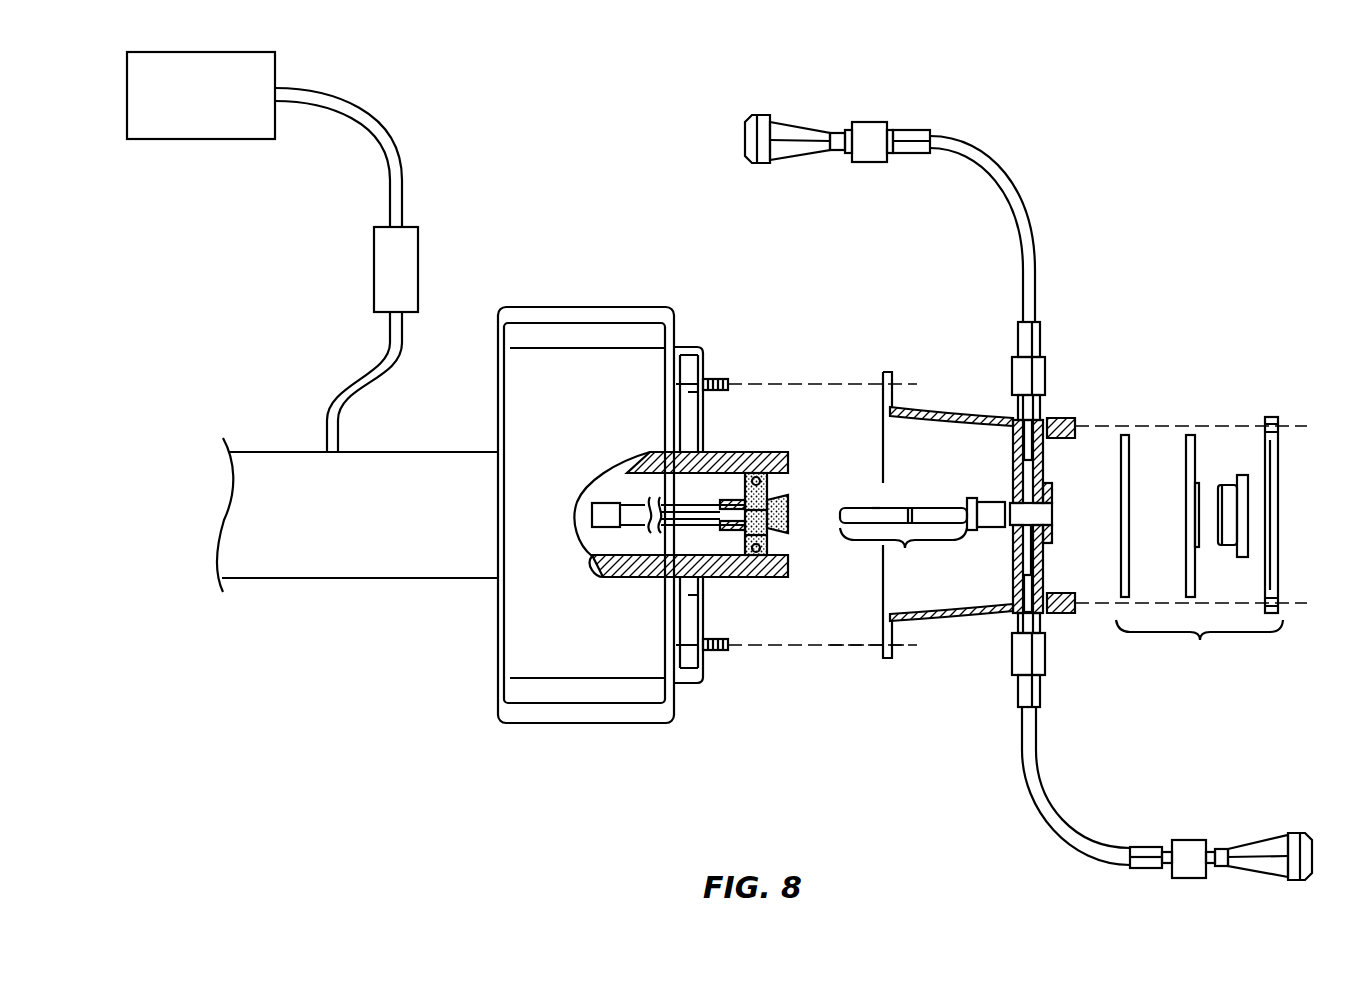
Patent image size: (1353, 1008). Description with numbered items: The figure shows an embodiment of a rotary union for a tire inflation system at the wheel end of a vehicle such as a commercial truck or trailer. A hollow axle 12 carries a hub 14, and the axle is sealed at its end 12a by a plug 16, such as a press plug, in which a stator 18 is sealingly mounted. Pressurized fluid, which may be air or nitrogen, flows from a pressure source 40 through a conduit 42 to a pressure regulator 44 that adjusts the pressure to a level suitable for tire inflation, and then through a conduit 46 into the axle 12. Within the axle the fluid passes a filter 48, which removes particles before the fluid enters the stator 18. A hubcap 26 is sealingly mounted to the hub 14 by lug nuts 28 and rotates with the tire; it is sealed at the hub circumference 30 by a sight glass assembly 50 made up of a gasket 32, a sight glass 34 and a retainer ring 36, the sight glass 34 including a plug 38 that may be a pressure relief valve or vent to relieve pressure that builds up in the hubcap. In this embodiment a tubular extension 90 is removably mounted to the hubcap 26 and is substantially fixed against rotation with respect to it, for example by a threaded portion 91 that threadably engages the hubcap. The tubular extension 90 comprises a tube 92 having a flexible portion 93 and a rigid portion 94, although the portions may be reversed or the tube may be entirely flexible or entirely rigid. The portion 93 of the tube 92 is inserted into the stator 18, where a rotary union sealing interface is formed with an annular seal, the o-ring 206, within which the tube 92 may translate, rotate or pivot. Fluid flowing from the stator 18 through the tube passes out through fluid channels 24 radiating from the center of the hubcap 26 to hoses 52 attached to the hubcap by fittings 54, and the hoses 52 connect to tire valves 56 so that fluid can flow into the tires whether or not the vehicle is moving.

The hollow trailer axle 12 is at (352, 580).
The axle end 12a is at (752, 452).
The hub 14 is at (585, 725).
The plug 16 is at (767, 540).
The stator 18 is at (793, 508).
The fluid channels 24 is at (1048, 478).
The hubcap 26 is at (930, 622).
The lug nuts 28 is at (712, 378).
The hub circumference 30 is at (1080, 410).
The gasket 32 is at (1130, 445).
The sight glass 34 is at (1197, 445).
The retainer ring 36 is at (1280, 465).
The plug 38 is at (1250, 520).
The pressure source 40 is at (205, 52).
The conduit 42 is at (378, 124).
The pressure regulator 44 is at (418, 268).
The conduit 46 is at (348, 380).
The filter 48 is at (585, 510).
The sight glass assembly 50 is at (1199, 646).
The hoses 52 is at (1030, 207).
The fittings 54 is at (1045, 362).
The tire valves 56 is at (800, 122).
The tubular extension 90 is at (852, 433).
The threaded portion 91 is at (988, 530).
The tube 92 is at (903, 542).
The flexible portion 93 is at (935, 507).
The rigid portion 94 is at (872, 505).
The o-ring 206 is at (745, 536).